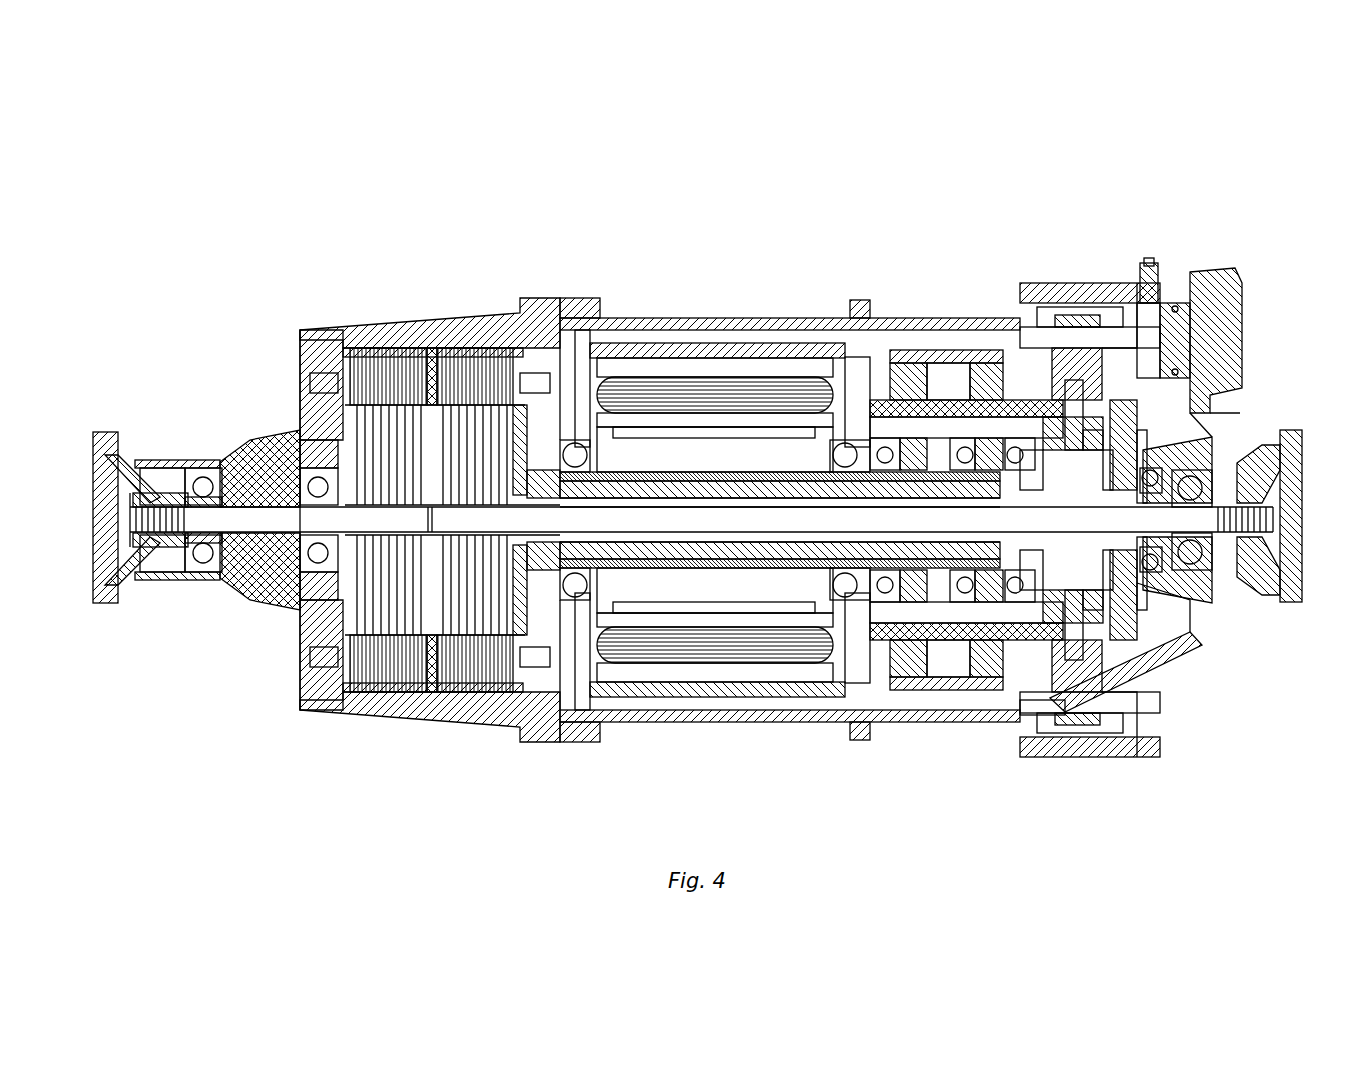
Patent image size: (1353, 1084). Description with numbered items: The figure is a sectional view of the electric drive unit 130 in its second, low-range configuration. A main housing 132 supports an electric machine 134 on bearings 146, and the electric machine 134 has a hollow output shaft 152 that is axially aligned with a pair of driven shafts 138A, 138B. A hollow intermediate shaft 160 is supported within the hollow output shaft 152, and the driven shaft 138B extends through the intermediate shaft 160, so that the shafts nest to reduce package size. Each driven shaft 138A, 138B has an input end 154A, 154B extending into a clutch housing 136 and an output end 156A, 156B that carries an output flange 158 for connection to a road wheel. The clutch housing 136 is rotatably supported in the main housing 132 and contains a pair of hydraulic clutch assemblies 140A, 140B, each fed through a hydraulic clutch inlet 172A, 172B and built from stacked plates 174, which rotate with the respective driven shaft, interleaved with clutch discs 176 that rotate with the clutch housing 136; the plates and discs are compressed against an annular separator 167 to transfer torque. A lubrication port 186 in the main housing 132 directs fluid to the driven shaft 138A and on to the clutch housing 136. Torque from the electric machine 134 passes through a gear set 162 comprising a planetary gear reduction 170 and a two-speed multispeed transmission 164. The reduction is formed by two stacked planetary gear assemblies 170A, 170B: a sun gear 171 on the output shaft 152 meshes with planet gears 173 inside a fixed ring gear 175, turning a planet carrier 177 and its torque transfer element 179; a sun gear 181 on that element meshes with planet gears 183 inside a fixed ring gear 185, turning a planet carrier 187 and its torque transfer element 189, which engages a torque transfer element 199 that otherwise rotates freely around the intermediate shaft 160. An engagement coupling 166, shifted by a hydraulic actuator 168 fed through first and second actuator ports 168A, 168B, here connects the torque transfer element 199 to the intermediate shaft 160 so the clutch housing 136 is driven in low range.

The electric drive unit 130 is at (732, 293).
The main housing 132 is at (628, 318).
The electric machine 134 is at (650, 370).
The clutch housing 136 is at (390, 347).
The driven shaft 138A is at (420, 520).
The driven shaft 138B is at (443, 519).
The clutch assembly 140A is at (345, 425).
The clutch assembly 140B is at (428, 340).
The bearing 146 is at (578, 452).
The hollow output shaft 152 is at (913, 680).
The input end 154A is at (320, 543).
The input end 154B is at (508, 650).
The output end 156A is at (200, 545).
The output end 156B is at (1250, 545).
The output flange 158 is at (115, 432).
The hollow intermediate shaft 160 is at (705, 553).
The gear set 162 is at (1037, 680).
The multispeed transmission 164 is at (1105, 645).
The engagement coupling 166 is at (1118, 400).
The annular separator 167 is at (455, 348).
The hydraulic actuator 168 is at (1180, 340).
The first actuator port 168A is at (1152, 262).
The second actuator port 168B is at (1233, 320).
The planetary gear reduction 170 is at (987, 385).
The planetary gear assembly 170A is at (905, 382).
The planetary gear assembly 170B is at (1010, 350).
The sun gear 171 is at (920, 680).
The hydraulic clutch inlet 172A is at (345, 335).
The hydraulic clutch inlet 172B is at (538, 340).
The planet gear 173 is at (950, 385).
The stacked plate 174 is at (380, 617).
The ring gear 175 is at (893, 680).
The clutch disc 176 is at (415, 617).
The planet carrier 177 is at (942, 680).
The torque transfer element 179 is at (1107, 637).
The sun gear 181 is at (1045, 400).
The planet gear 183 is at (1027, 662).
The ring gear 185 is at (1005, 348).
The lubrication port 186 is at (250, 462).
The planet carrier 187 is at (1083, 665).
The torque transfer element 189 is at (1130, 662).
The torque transfer element 199 is at (1148, 447).